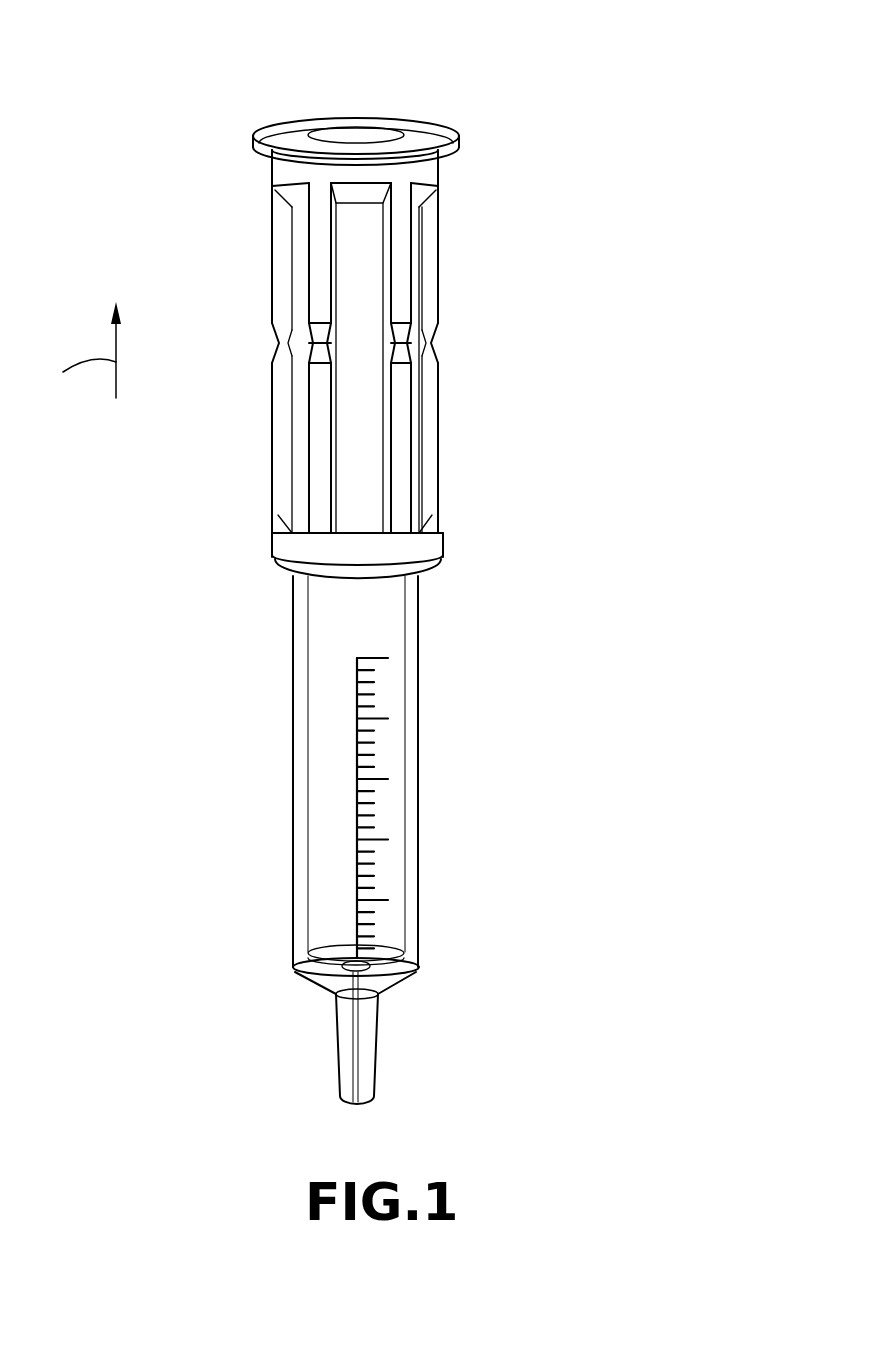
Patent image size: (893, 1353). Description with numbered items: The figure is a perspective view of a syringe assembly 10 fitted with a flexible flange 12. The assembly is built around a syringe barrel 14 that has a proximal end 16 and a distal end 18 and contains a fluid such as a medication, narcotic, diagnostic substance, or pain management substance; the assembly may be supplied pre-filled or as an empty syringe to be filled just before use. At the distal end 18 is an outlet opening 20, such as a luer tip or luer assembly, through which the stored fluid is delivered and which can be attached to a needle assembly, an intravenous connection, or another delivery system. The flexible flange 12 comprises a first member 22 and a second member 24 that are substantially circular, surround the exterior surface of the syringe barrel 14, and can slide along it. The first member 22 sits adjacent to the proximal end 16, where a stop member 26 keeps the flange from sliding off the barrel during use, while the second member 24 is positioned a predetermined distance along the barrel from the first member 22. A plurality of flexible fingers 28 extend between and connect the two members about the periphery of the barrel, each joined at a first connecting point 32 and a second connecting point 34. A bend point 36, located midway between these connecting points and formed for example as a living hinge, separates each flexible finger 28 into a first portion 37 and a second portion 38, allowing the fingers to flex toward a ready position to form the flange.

The syringe assembly 10 is at (214, 66).
The flexible flange 12 is at (500, 248).
The syringe barrel 14 is at (413, 613).
The proximal end 16 is at (440, 164).
The distal end 18 is at (420, 910).
The outlet opening 20 is at (368, 1065).
The first member 22 is at (298, 170).
The second member 24 is at (443, 553).
The stop member 26 is at (452, 136).
The flexible finger 28 is at (433, 291).
The first connecting point 32 is at (440, 197).
The second connecting point 34 is at (437, 528).
The bend point 36 is at (275, 350).
The first portion 37 is at (270, 233).
The second portion 38 is at (271, 402).